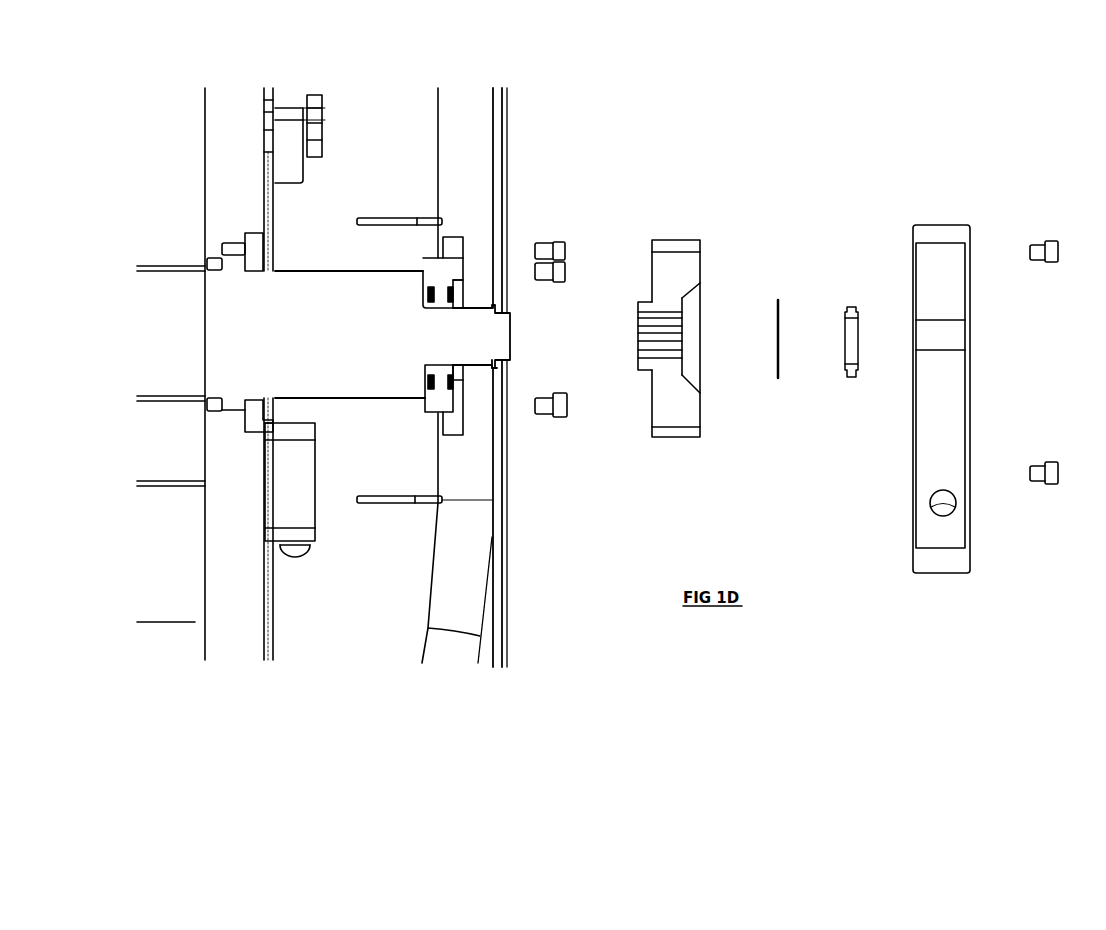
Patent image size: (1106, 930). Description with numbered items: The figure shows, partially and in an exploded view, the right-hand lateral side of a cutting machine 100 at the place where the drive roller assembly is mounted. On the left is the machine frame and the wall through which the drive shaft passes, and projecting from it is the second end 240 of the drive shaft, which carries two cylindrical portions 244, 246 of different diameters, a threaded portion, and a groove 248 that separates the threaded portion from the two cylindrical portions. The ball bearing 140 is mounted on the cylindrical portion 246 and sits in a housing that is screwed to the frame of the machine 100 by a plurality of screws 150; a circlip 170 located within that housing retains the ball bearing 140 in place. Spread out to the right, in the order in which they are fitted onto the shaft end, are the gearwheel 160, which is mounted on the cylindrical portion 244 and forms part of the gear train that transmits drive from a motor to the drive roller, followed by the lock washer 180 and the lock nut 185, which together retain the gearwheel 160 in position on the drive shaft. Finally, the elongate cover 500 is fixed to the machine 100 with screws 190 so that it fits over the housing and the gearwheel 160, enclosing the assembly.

The cutting machine 100 is at (180, 554).
The ball bearing 140 is at (438, 297).
The screws 150 is at (562, 252).
The gearwheel 160 is at (698, 252).
The circlip 170 is at (460, 275).
The lock washer 180 is at (787, 313).
The lock nut 185 is at (865, 300).
The screws 190 is at (1052, 240).
The second end 240 is at (513, 335).
The cylindrical portion 244 is at (490, 343).
The cylindrical portion 246 is at (452, 336).
The groove 248 is at (497, 362).
The cover 500 is at (948, 225).